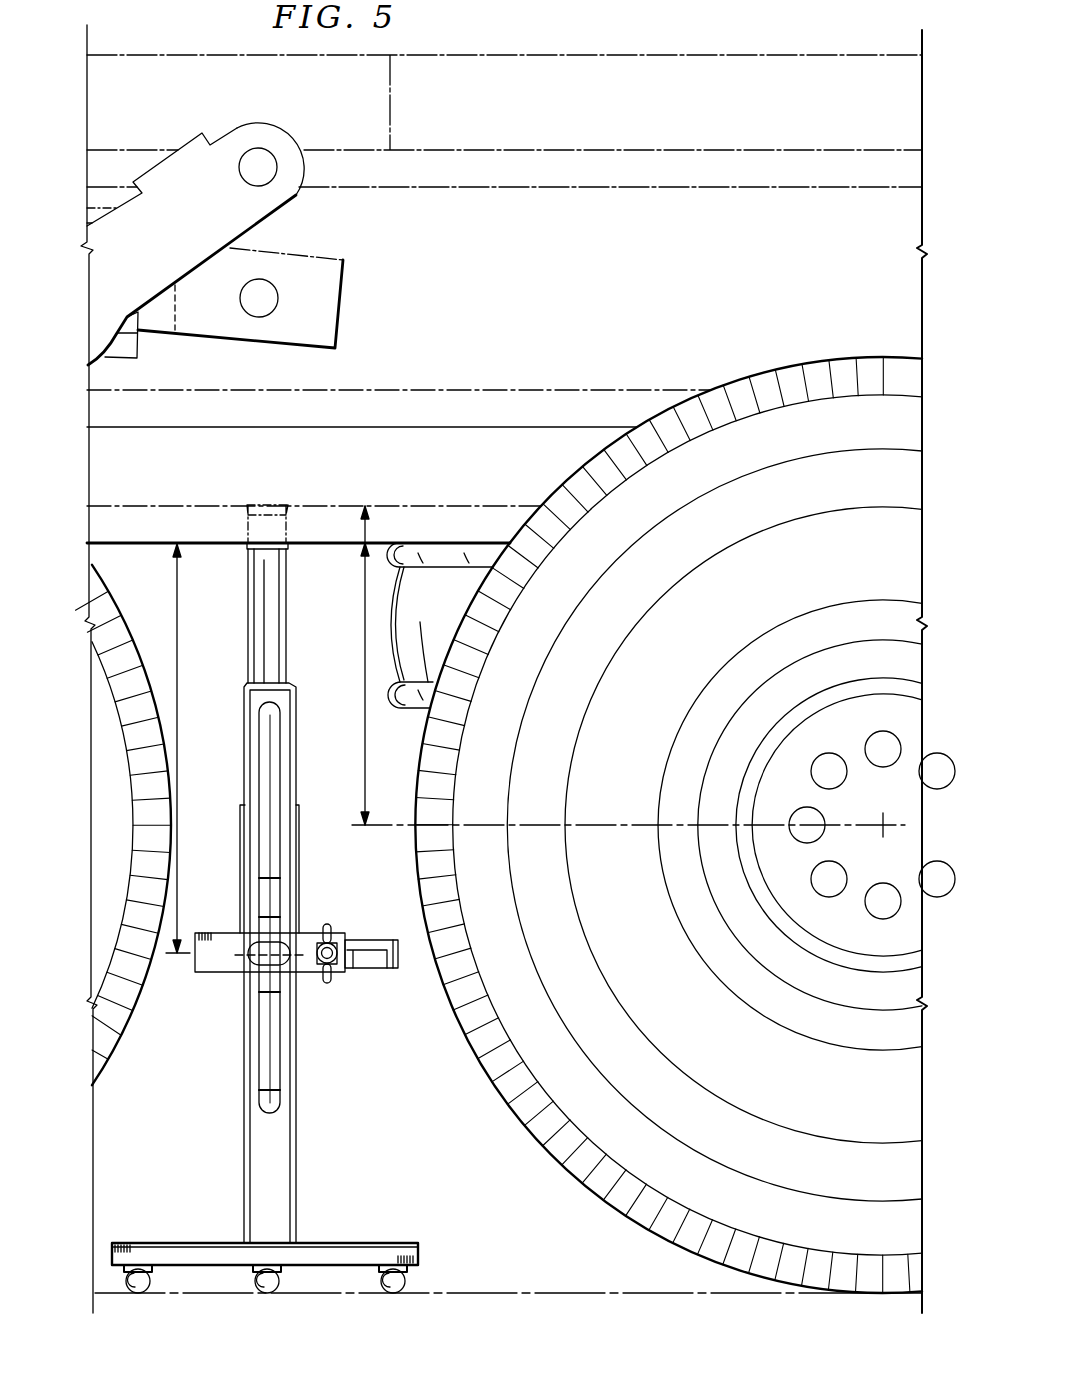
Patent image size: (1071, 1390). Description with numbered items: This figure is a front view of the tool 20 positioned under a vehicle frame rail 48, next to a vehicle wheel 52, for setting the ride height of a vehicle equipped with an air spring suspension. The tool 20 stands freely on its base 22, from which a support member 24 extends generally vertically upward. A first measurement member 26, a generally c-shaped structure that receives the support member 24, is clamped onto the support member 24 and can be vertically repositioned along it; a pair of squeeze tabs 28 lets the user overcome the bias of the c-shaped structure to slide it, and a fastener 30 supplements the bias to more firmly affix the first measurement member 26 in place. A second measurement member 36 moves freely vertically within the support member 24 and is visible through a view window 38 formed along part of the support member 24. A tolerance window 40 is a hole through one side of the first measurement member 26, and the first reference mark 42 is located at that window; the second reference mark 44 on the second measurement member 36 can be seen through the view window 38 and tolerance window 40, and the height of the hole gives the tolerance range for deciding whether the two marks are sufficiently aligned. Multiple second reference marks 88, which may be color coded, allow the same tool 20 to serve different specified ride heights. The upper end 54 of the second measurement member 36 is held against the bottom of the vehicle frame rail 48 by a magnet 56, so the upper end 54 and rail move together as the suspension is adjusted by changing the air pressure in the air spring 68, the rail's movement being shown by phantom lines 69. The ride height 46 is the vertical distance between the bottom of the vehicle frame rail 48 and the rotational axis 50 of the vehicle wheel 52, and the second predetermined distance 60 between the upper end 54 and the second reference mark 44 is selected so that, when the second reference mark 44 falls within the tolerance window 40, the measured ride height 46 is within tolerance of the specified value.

The tool 20 is at (363, 1136).
The base 22 is at (178, 1243).
The support member 24 is at (246, 1143).
The first measurement member 26 is at (225, 934).
The squeeze tabs 28 is at (362, 940).
The fastener 30 is at (330, 983).
The second measurement member 36 is at (248, 638).
The view window 38 is at (265, 770).
The tolerance window 40 is at (290, 944).
The first reference mark 42 is at (242, 958).
The second reference mark 44 is at (270, 996).
The ride height 46 is at (364, 701).
The vehicle frame rail 48 is at (199, 480).
The rotational axis 50 is at (880, 818).
The vehicle wheel 52 is at (844, 568).
The upper end 54 is at (291, 553).
The magnet 56 is at (248, 547).
The second predetermined distance 60 is at (176, 592).
The air spring 68 is at (424, 608).
The phantom lines 69 is at (491, 391).
The multiple second reference marks 88 is at (270, 875).